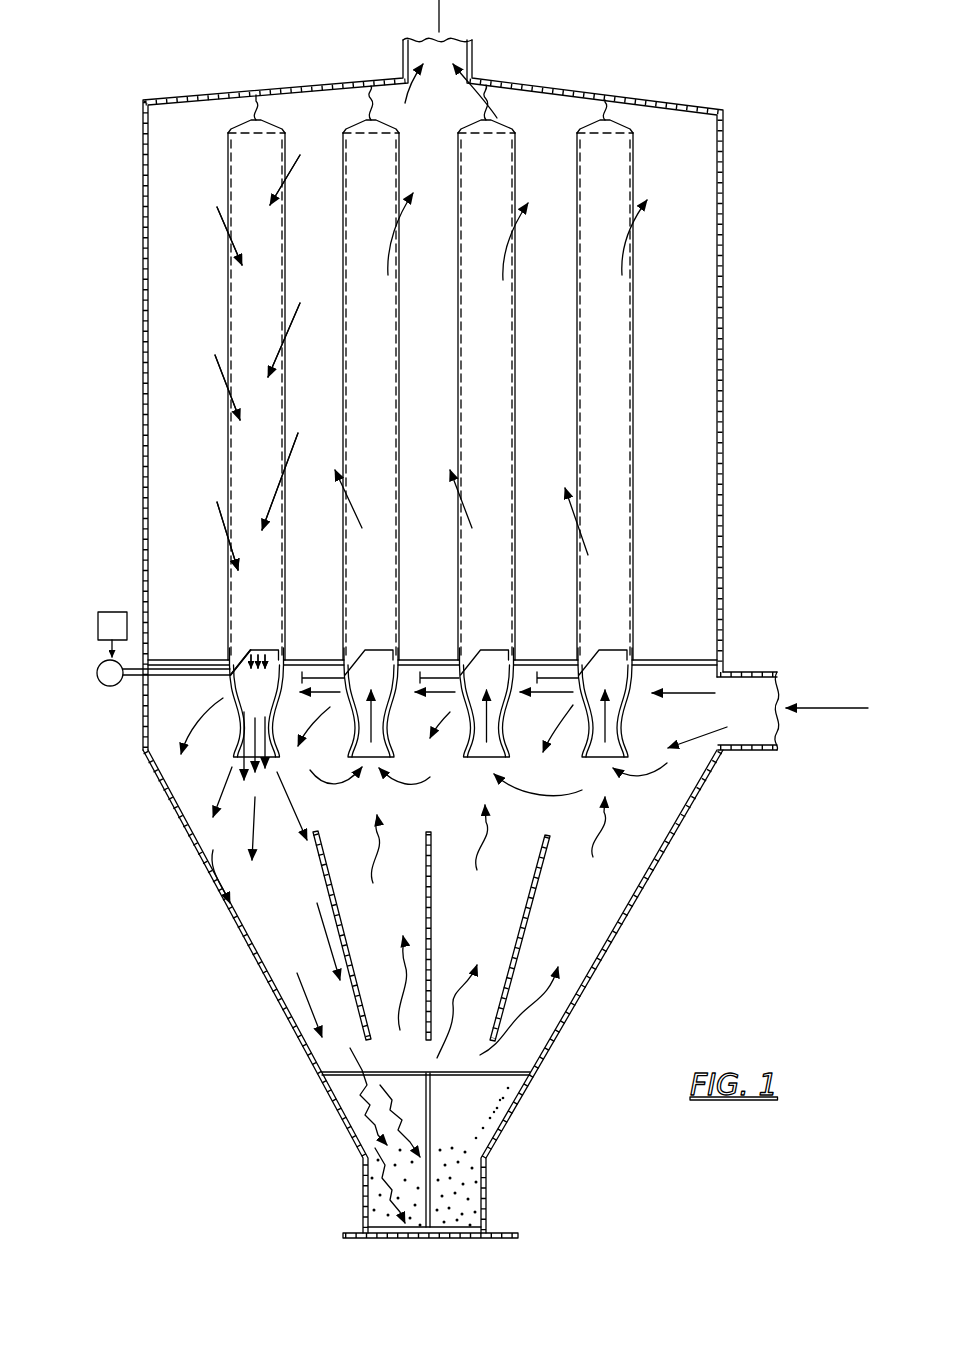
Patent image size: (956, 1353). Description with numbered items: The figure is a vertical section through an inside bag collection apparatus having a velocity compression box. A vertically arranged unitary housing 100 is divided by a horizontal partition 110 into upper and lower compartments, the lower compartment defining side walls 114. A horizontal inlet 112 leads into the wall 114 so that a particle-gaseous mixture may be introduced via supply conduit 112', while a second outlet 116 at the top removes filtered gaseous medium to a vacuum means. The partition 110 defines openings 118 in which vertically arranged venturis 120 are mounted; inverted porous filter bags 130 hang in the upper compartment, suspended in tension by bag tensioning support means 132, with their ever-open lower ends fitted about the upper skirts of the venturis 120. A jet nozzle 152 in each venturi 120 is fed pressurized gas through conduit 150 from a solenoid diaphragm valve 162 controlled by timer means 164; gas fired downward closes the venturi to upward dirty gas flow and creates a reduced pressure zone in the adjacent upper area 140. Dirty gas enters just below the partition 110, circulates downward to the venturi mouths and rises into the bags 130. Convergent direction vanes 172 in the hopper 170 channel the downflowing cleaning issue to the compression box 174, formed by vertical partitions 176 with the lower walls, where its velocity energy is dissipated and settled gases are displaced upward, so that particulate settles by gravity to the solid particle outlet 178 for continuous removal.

The housing 100 is at (723, 378).
The horizontal partition 110 is at (718, 660).
The horizontal inlet 112 is at (792, 698).
The supply conduit 112' is at (774, 659).
The side walls 114 is at (700, 784).
The second outlet 116 is at (478, 8).
The openings 118 is at (630, 661).
The venturis 120 is at (618, 720).
The filter bags 130 is at (634, 532).
The bag tensioning support means 132 is at (607, 112).
The upper area 140 is at (262, 700).
The conduit 150 is at (205, 683).
The jet nozzle 152 is at (243, 650).
The solenoid diaphragm valve 162 is at (100, 687).
The timer means 164 is at (100, 611).
The hopper 170 is at (409, 912).
The convergent direction vanes 172 is at (522, 911).
The compression box 174 is at (510, 1112).
The vertical partitions 176 is at (410, 1097).
The solid particle outlet 178 is at (460, 1233).